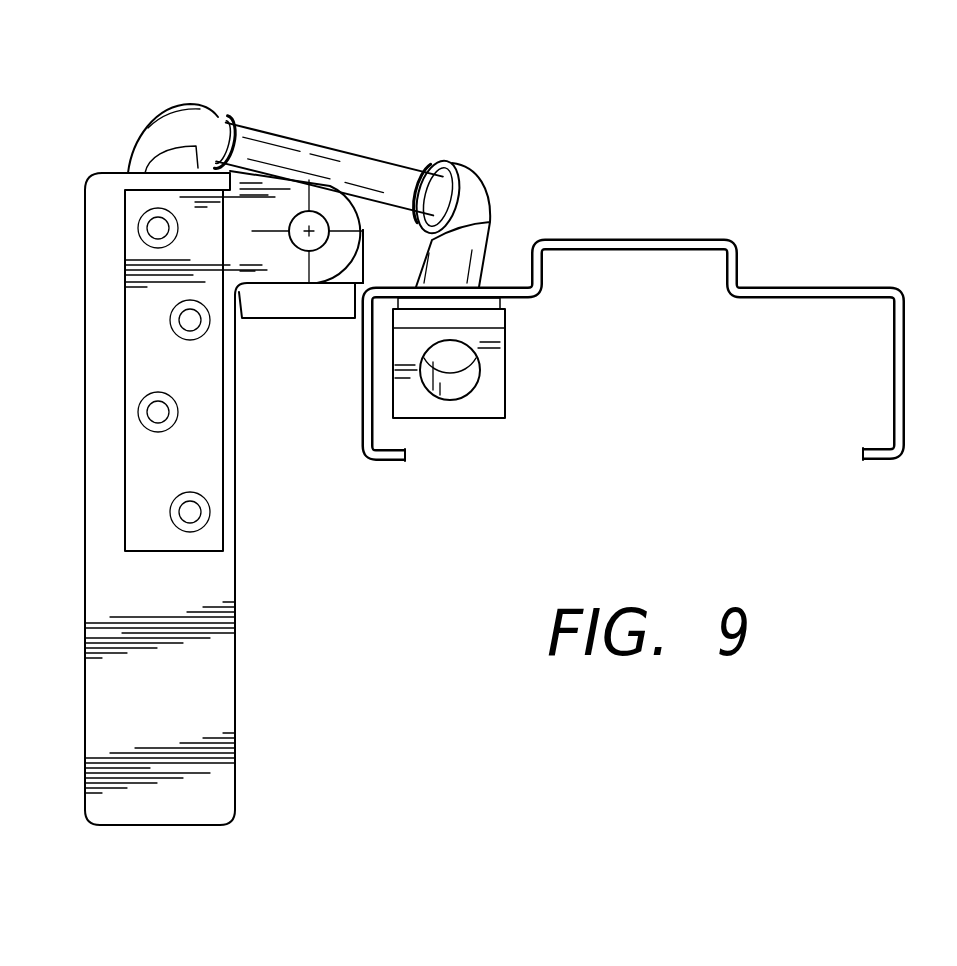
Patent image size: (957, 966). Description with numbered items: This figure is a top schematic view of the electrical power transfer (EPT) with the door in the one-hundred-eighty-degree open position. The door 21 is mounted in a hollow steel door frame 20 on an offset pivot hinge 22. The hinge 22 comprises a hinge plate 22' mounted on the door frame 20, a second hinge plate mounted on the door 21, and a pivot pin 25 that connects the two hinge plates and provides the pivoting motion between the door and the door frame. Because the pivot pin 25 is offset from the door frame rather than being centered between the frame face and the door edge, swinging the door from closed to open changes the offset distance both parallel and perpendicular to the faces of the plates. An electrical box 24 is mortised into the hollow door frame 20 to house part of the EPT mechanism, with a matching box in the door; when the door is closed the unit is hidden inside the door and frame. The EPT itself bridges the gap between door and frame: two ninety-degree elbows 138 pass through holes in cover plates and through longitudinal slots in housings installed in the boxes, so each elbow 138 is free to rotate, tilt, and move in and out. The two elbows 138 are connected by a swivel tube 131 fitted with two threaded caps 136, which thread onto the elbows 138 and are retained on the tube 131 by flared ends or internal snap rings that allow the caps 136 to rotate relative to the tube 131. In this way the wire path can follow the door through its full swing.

The door frame 20 is at (727, 242).
The door 21 is at (220, 703).
The offset pivot hinge 22 is at (401, 180).
The hinge plate 22' is at (298, 341).
The electrical box 24 is at (497, 407).
The pivot pin 25 is at (309, 231).
The swivel tube 131 is at (270, 143).
The threaded cap 136 is at (223, 120).
The elbow 138 is at (155, 128).